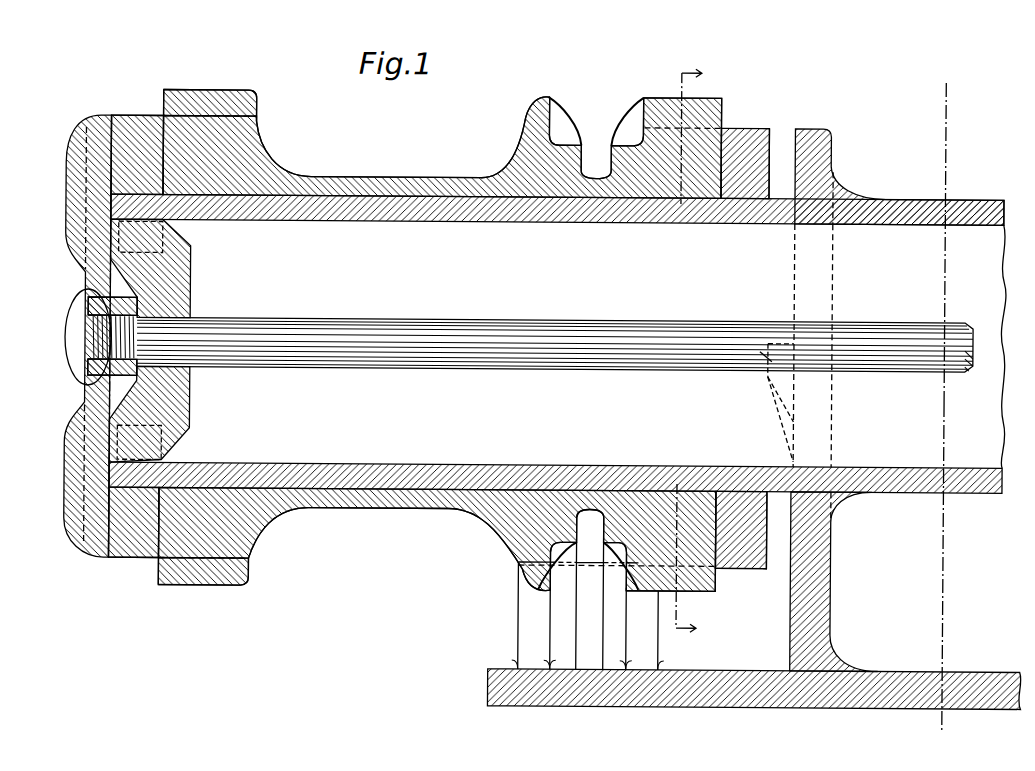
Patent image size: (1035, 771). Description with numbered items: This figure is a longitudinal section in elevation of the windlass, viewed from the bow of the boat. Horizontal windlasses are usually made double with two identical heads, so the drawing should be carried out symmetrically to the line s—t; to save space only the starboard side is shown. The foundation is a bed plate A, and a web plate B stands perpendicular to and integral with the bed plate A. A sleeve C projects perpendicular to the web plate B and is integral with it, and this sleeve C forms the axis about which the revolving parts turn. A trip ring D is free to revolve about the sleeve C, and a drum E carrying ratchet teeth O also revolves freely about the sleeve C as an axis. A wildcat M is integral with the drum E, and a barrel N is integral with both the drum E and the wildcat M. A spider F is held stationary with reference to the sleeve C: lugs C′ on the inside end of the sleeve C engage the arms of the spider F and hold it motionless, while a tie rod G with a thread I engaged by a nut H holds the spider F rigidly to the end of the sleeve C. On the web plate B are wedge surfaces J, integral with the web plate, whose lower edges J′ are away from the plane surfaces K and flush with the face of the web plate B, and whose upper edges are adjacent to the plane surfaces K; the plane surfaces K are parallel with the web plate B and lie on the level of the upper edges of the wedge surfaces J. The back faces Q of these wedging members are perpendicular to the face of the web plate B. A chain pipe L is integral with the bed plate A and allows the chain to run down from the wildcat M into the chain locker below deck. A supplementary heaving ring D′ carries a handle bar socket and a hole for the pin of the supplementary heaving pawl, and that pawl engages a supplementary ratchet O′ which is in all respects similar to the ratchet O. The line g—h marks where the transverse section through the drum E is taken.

The bed plate A is at (672, 705).
The web plate B is at (823, 150).
The sleeve C is at (556, 222).
The lugs C′ is at (162, 243).
The trip ring D is at (770, 127).
The supplementary heaving ring D′ is at (124, 130).
The drum E is at (727, 142).
The spider F is at (65, 182).
The tie rod G is at (455, 330).
The nut H is at (92, 312).
The thread I is at (90, 338).
The wedge surfaces J is at (775, 402).
The lower edges of wedge surfaces J′ is at (793, 460).
The plane surfaces K is at (765, 355).
The chain pipe L is at (521, 617).
The wildcat M is at (590, 344).
The barrel N is at (378, 177).
The ratchet teeth O is at (712, 97).
The supplementary ratchet O′ is at (200, 92).
The back faces of wedging members Q is at (772, 342).
The section line g—h g is at (686, 126).
The section line g— h is at (682, 570).
The line s—t s is at (945, 231).
The line s— t is at (941, 581).